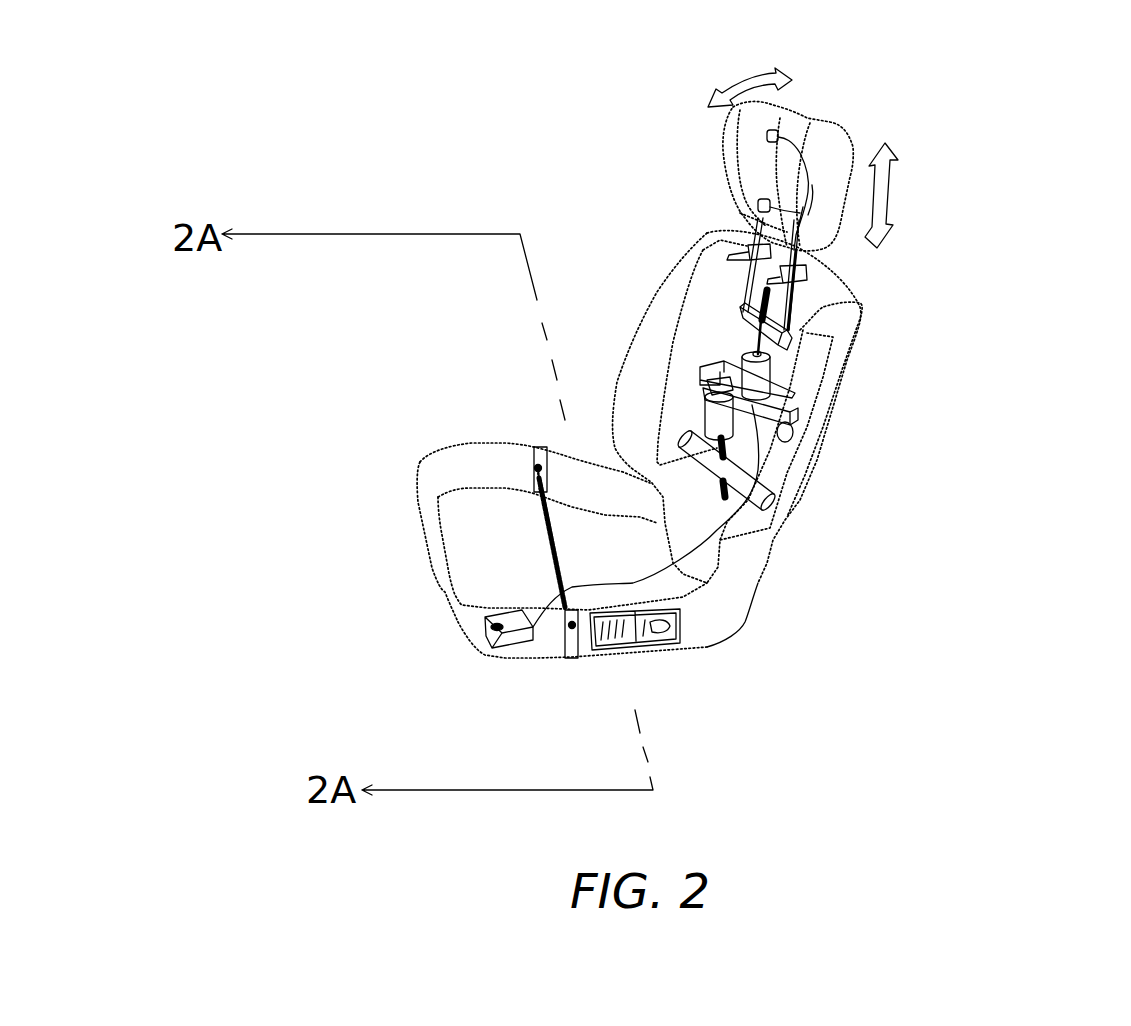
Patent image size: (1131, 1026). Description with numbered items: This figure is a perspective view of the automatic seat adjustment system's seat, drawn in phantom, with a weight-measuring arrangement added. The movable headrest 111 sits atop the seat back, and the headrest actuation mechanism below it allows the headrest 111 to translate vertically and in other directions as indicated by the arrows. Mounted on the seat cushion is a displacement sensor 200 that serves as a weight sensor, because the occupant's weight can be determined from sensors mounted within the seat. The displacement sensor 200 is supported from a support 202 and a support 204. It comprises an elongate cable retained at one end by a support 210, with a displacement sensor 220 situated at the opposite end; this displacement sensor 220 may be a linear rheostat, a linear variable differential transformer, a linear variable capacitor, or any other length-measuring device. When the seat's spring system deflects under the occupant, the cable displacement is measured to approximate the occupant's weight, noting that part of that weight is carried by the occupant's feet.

The headrest 111 is at (830, 153).
The displacement sensor 200 is at (548, 538).
The support 202 is at (568, 640).
The support 204 is at (537, 448).
The support 210 is at (570, 626).
The displacement sensor 220 is at (532, 468).